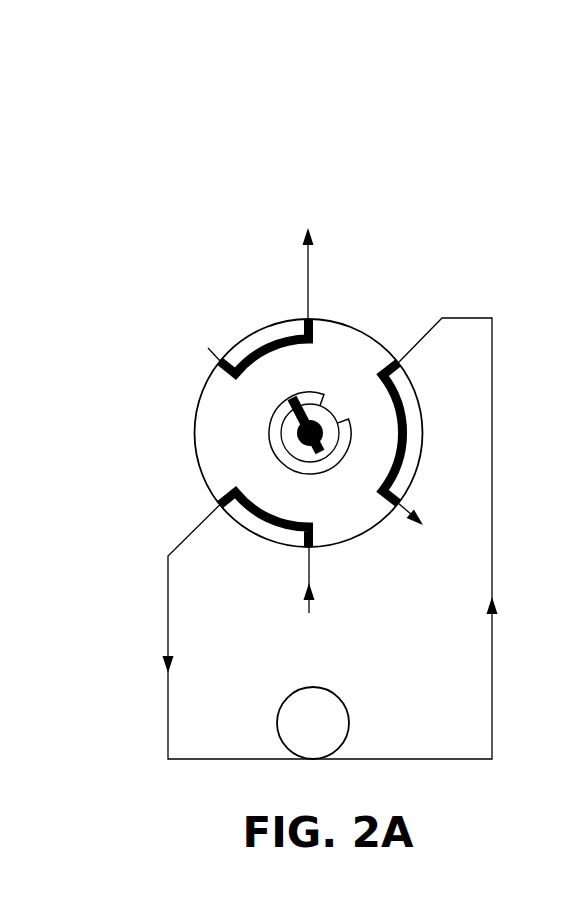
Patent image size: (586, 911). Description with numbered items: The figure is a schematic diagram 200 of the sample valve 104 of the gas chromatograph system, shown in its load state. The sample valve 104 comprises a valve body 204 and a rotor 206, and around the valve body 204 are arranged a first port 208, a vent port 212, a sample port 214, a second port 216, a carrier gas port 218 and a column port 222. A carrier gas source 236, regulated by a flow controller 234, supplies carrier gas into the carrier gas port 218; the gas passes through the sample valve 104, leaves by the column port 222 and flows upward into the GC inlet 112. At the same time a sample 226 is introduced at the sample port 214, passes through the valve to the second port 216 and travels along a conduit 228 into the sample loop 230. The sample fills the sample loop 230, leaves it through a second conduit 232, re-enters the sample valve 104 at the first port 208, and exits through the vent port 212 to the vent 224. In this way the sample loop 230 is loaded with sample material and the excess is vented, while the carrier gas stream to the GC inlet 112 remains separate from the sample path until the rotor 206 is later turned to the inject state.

The schematic diagram 200 is at (112, 35).
The sample valve 104 is at (192, 176).
The GC inlet 112 is at (298, 209).
The valve body 204 is at (318, 318).
The rotor 206 is at (344, 540).
The first port 208 is at (398, 363).
The vent port 212 is at (398, 503).
The sample port 214 is at (306, 548).
The second port 216 is at (218, 503).
The carrier gas port 218 is at (220, 357).
The column port 222 is at (305, 318).
The vent 224 is at (443, 553).
The sample 226 is at (275, 627).
The conduit 228 is at (168, 608).
The sample loop 230 is at (295, 735).
The conduit 232 is at (492, 675).
The flow controller 234 is at (192, 340).
The carrier gas source 236 is at (183, 315).